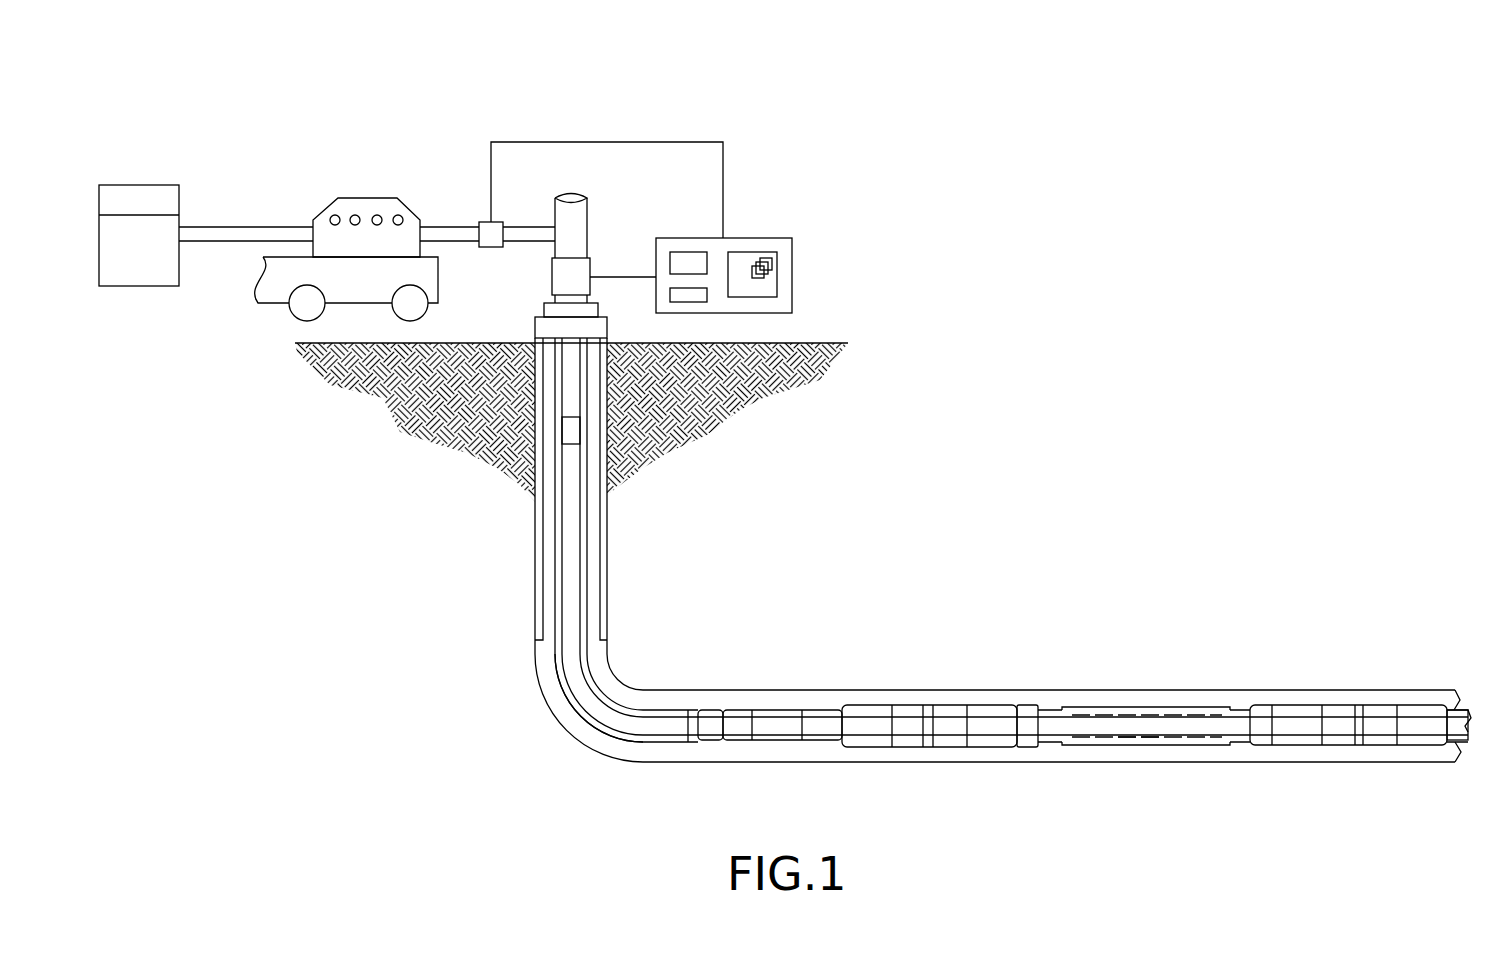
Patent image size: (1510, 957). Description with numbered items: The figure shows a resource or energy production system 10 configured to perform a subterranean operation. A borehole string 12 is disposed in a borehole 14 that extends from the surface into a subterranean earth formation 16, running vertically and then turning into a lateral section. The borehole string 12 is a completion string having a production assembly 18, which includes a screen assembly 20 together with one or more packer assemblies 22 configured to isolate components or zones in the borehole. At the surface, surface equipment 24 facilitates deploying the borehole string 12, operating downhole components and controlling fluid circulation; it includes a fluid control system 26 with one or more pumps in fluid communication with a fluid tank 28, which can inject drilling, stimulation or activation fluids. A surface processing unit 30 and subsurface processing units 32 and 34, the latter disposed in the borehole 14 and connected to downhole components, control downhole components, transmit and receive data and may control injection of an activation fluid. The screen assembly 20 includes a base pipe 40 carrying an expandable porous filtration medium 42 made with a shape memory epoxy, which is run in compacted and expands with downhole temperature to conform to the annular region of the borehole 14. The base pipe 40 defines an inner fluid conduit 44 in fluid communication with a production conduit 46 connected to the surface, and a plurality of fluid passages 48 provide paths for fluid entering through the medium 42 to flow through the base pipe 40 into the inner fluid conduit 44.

The system 10 is at (1005, 68).
The borehole string 12 is at (588, 662).
The borehole 14 is at (538, 678).
The earth formation 16 is at (942, 470).
The production assembly 18 is at (1232, 568).
The screen assembly 20 is at (1150, 725).
The packer assemblies 22 is at (948, 712).
The surface equipment 24 is at (462, 112).
The fluid control system 26 is at (323, 220).
The fluid tank 28 is at (140, 198).
The surface processing unit 30 is at (777, 248).
The subsurface processing unit 32 is at (575, 430).
The subsurface processing unit 34 is at (832, 738).
The base pipe 40 is at (1233, 735).
The expandable porous filtration medium 42 is at (1083, 715).
The inner fluid conduit 44 is at (1193, 725).
The production conduit 46 is at (622, 723).
The fluid passages 48 is at (1158, 738).